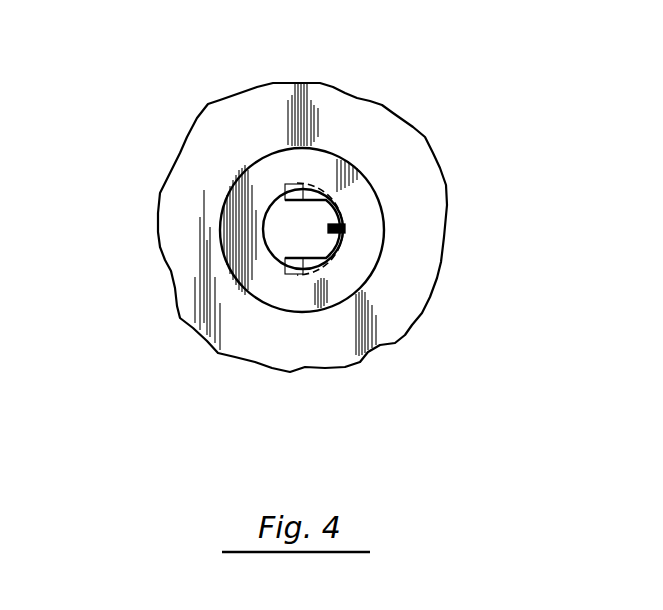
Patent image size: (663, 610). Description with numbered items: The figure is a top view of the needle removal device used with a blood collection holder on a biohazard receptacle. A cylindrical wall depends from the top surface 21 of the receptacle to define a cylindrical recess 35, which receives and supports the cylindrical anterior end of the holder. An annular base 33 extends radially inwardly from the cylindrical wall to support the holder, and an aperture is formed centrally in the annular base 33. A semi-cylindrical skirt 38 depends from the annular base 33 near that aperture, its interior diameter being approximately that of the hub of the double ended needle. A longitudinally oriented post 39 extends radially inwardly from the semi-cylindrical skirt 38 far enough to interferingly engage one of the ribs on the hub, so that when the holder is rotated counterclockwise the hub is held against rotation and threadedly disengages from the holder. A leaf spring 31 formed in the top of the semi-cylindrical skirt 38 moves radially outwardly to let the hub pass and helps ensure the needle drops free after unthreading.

The top surface 21 is at (190, 222).
The leaf spring 31 is at (298, 264).
The annular base 33 is at (283, 167).
The cylindrical recess 35 is at (360, 213).
The semi-cylindrical skirt 38 is at (347, 227).
The post 39 is at (345, 253).